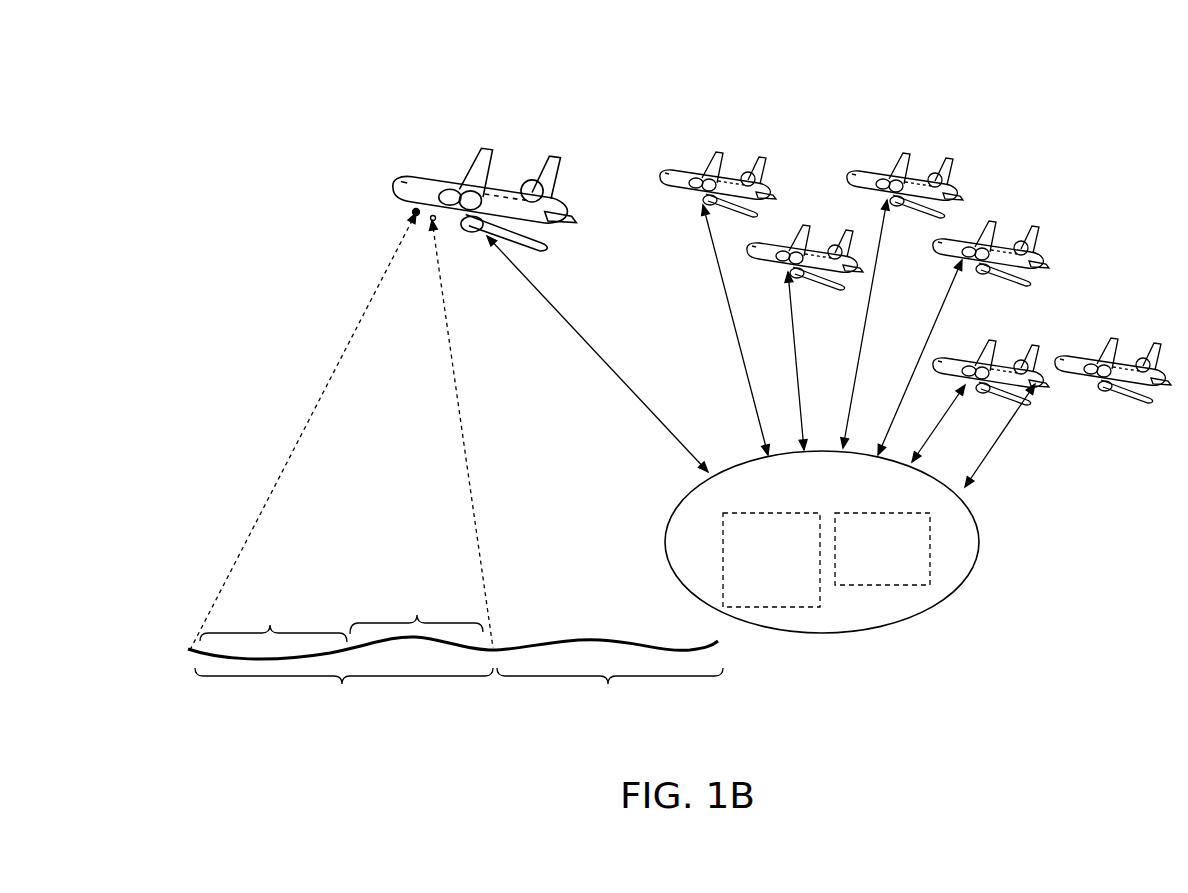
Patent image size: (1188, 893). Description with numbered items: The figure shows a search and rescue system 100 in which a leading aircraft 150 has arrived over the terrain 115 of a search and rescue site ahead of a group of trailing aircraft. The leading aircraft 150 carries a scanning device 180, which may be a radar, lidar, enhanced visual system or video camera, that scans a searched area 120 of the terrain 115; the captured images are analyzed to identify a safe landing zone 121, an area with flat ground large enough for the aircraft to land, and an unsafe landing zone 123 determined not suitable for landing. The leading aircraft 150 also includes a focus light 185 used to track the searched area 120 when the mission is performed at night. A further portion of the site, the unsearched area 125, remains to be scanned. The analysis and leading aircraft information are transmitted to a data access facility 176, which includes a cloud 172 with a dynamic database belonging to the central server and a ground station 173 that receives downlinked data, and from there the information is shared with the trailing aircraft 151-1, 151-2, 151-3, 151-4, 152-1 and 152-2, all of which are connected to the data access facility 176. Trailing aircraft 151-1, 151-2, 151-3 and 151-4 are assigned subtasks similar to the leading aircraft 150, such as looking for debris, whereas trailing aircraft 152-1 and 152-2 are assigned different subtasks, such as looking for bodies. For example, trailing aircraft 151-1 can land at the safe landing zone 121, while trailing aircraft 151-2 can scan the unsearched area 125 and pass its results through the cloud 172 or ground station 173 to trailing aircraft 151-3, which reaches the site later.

The search and rescue system 100 is at (327, 108).
The leading aircraft 150 is at (422, 178).
The scanning device 180 is at (411, 208).
The focus light 185 is at (436, 222).
The trailing aircraft 151-1 is at (690, 168).
The trailing aircraft 151-2 is at (963, 234).
The trailing aircraft 151-3 is at (963, 352).
The trailing aircraft 151-4 is at (1086, 351).
The trailing aircraft 152-1 is at (777, 236).
The trailing aircraft 152-2 is at (877, 168).
The data access facility 176 is at (822, 542).
The cloud 172 is at (771, 560).
The ground station 173 is at (882, 549).
The terrain 115 is at (276, 707).
The searched area 120 is at (344, 689).
The safe landing zone 121 is at (273, 622).
The unsafe landing zone 123 is at (416, 613).
The unsearched area 125 is at (610, 689).